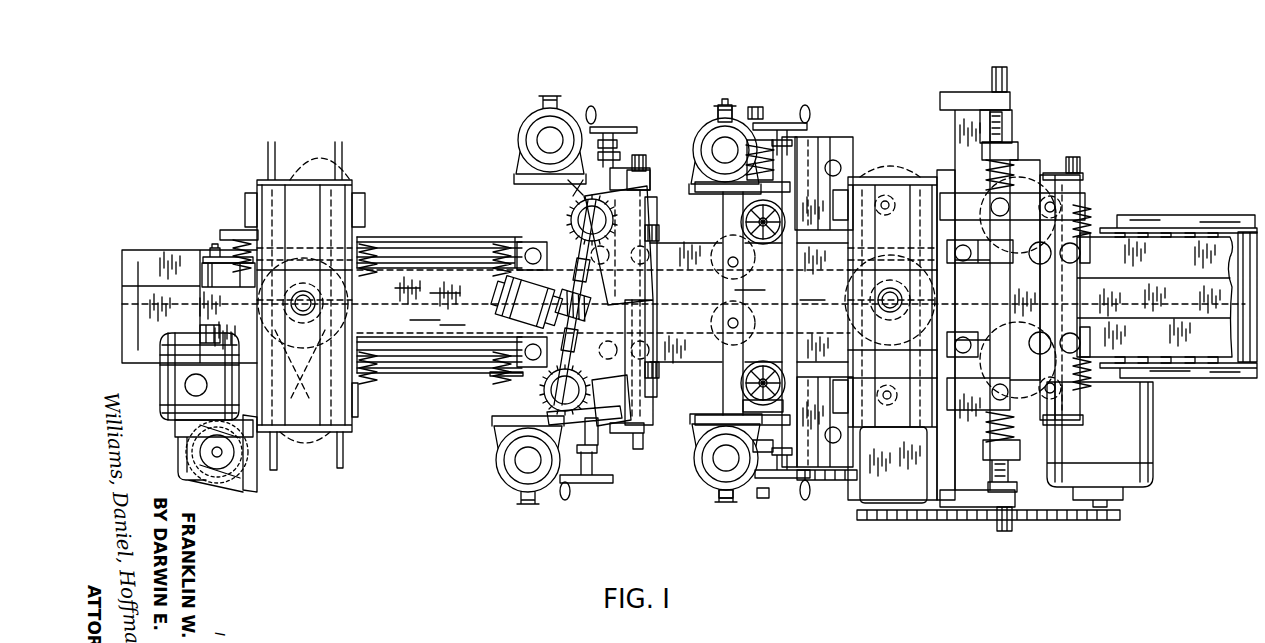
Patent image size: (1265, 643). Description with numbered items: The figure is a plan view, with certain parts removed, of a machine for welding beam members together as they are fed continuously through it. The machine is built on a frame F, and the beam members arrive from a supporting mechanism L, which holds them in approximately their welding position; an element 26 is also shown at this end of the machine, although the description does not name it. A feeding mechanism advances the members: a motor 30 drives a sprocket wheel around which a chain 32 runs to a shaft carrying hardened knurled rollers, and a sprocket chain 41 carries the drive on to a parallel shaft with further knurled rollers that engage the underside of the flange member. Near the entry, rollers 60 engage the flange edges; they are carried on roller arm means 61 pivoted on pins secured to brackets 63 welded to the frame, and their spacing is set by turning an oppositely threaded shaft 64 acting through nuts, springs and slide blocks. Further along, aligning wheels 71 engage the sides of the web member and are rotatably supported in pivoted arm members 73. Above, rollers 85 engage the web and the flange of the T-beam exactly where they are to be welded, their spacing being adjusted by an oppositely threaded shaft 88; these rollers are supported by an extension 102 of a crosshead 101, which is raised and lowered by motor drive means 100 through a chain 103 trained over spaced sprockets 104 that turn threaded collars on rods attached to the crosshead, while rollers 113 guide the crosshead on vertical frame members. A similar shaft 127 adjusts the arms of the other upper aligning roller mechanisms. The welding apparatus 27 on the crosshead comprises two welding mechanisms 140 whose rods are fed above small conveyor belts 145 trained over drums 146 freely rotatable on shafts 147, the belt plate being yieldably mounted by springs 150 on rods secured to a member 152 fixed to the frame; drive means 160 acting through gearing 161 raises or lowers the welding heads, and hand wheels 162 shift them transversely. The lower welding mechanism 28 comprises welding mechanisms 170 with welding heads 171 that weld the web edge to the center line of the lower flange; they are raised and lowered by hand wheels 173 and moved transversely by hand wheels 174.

The frame F is at (315, 147).
The supporting mechanism L is at (1232, 388).
The work table 26 is at (1153, 220).
The welding apparatus 27 is at (497, 483).
The welding mechanism 28 is at (744, 507).
The motor 30 is at (1140, 445).
The chain 32 is at (1038, 522).
The sprocket chain 41 is at (833, 485).
The rollers 60 is at (1018, 203).
The roller arm means 61 is at (980, 418).
The brackets 63 is at (937, 145).
The shaft 64 is at (998, 531).
The aligning wheels 71 is at (723, 248).
The arm members 73 is at (726, 402).
The rollers 85 is at (1085, 230).
The shaft 88 is at (1079, 171).
The motor drive means 100 is at (211, 488).
The crosshead 101 is at (546, 351).
The extension 102 is at (1054, 175).
The chain 103 is at (402, 340).
The sprockets 104 is at (397, 301).
The rollers 113 is at (335, 179).
The shaft 127 is at (652, 155).
The welding mechanisms 140 is at (544, 122).
The conveyor belts 145 is at (202, 283).
The drums 146 is at (205, 264).
The shafts 147 is at (210, 260).
The springs 150 is at (237, 244).
The member 152 is at (432, 236).
The drive means 160 is at (504, 292).
The gearing 161 is at (573, 248).
The hand wheels 162 is at (631, 121).
The welding mechanisms 170 is at (734, 113).
The welding heads 171 is at (712, 135).
The hand wheels 173 is at (738, 216).
The hand wheels 174 is at (786, 118).